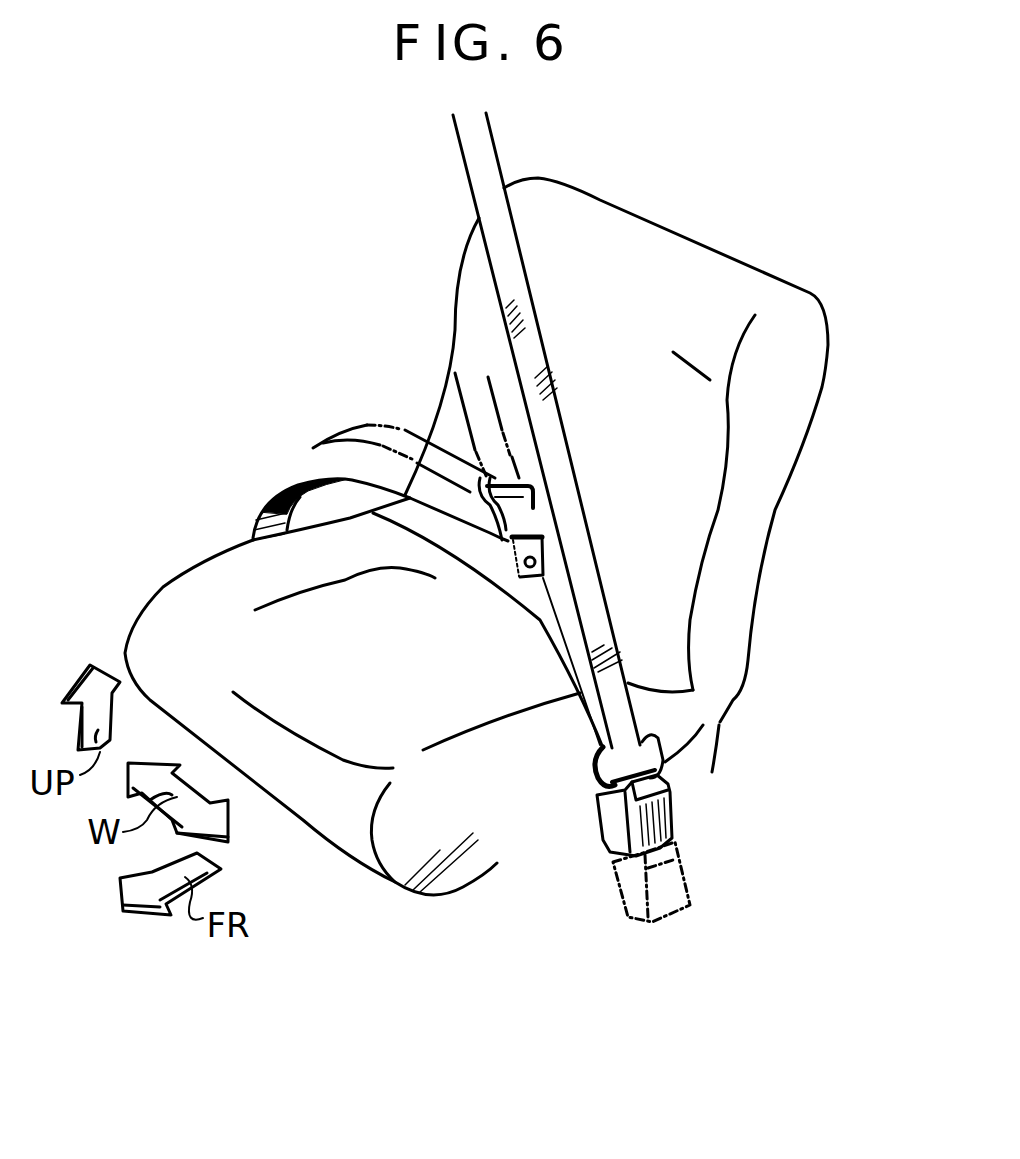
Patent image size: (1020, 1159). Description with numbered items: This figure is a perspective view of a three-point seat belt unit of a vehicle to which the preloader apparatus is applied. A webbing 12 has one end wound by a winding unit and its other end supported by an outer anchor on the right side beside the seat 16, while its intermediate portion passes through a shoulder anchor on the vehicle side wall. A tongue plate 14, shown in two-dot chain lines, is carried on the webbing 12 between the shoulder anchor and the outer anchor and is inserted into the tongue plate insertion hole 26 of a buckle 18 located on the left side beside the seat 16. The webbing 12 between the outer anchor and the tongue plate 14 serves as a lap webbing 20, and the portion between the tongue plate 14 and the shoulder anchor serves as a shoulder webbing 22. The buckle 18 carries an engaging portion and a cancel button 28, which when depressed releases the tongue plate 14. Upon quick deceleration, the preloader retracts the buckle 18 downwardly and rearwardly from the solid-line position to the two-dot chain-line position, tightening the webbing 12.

The webbing 12 is at (403, 418).
The tongue plate 14 is at (518, 518).
The seat 16 is at (443, 723).
The buckle 18 is at (680, 810).
The lap webbing 20 is at (497, 560).
The shoulder webbing 22 is at (585, 480).
The tongue plate insertion hole 26 is at (600, 772).
The cancel button 28 is at (690, 783).